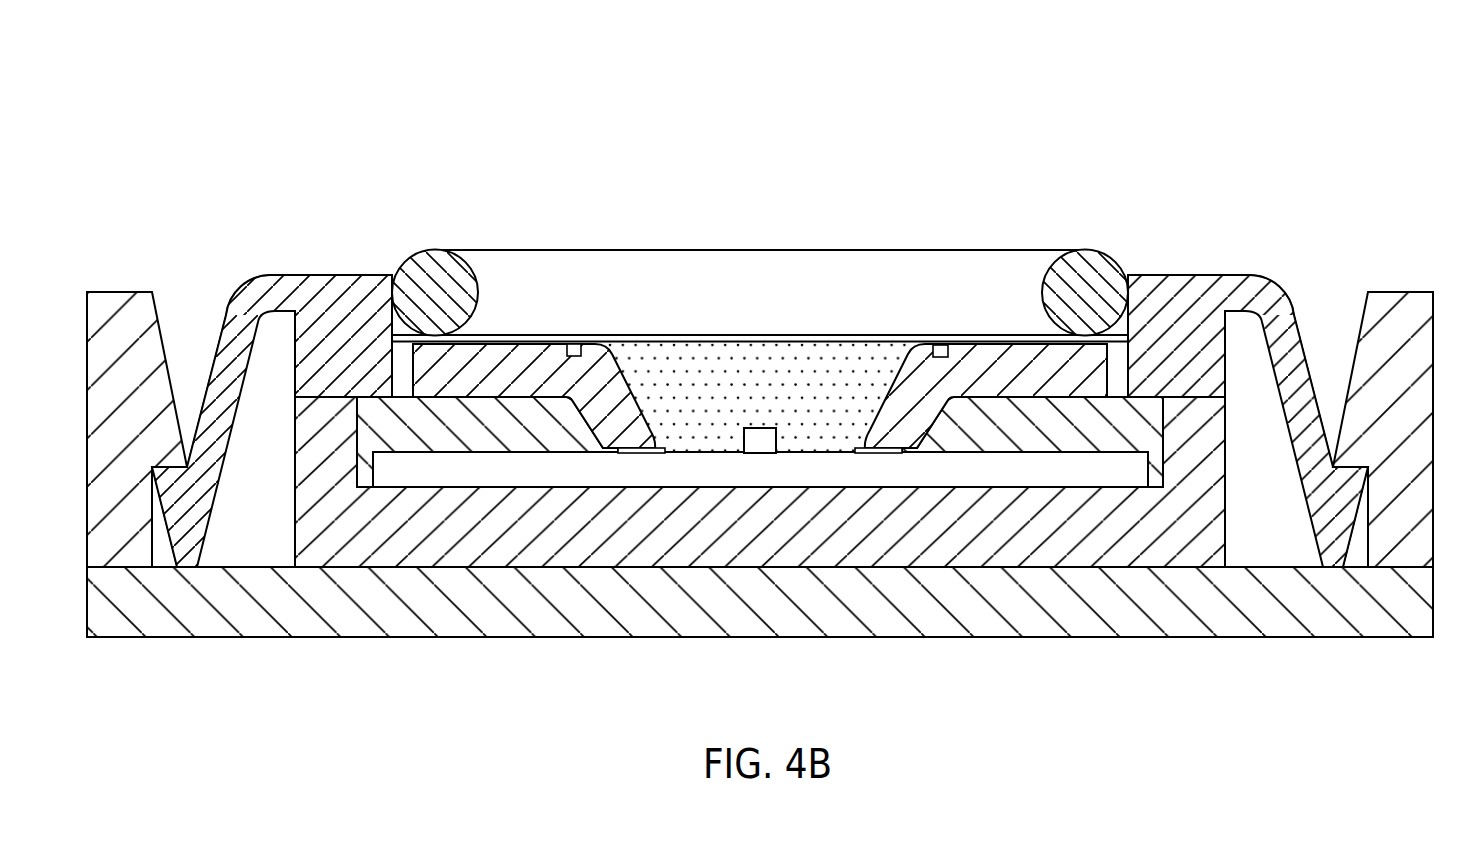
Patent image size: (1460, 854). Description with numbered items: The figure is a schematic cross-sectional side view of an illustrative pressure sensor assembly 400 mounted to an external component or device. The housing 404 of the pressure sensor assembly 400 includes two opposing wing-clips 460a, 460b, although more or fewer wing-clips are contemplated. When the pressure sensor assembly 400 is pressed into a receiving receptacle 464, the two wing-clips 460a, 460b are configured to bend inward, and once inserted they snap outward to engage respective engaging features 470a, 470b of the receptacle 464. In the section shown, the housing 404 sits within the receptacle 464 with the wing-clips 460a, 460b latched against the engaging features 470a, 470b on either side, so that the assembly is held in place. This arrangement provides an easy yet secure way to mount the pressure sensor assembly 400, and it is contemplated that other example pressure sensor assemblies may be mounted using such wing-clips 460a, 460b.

The pressure sensor assembly 400 is at (913, 72).
The housing 404 is at (767, 439).
The wing-clip 460a is at (243, 292).
The wing-clip 460b is at (1266, 284).
The engaging feature 470a is at (169, 375).
The engaging feature 470b is at (1349, 380).
The receiving receptacle 464 is at (377, 637).